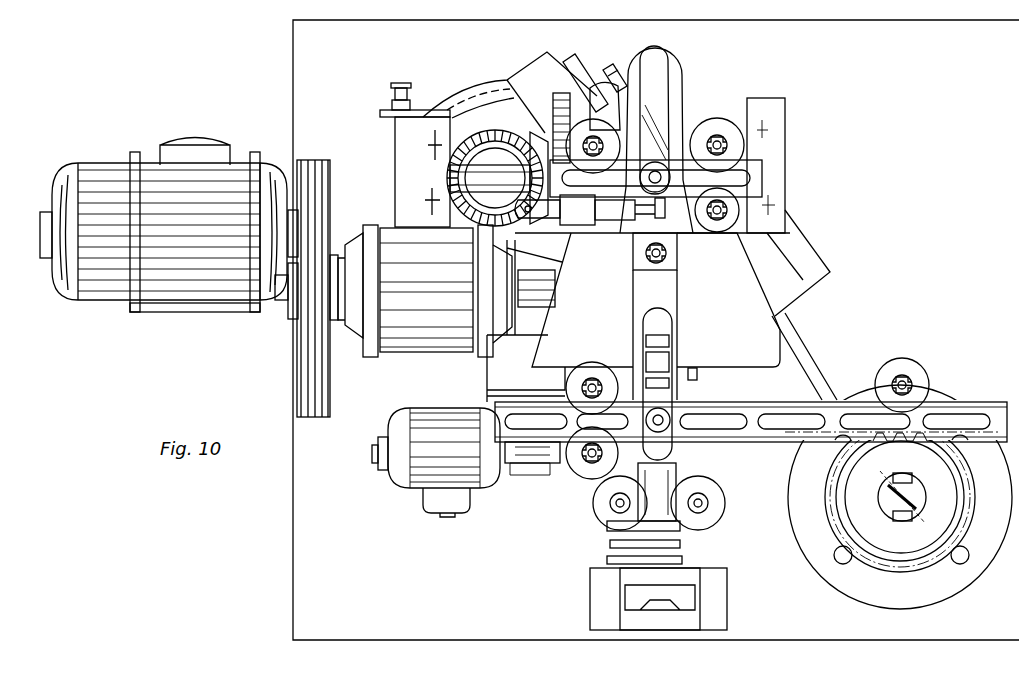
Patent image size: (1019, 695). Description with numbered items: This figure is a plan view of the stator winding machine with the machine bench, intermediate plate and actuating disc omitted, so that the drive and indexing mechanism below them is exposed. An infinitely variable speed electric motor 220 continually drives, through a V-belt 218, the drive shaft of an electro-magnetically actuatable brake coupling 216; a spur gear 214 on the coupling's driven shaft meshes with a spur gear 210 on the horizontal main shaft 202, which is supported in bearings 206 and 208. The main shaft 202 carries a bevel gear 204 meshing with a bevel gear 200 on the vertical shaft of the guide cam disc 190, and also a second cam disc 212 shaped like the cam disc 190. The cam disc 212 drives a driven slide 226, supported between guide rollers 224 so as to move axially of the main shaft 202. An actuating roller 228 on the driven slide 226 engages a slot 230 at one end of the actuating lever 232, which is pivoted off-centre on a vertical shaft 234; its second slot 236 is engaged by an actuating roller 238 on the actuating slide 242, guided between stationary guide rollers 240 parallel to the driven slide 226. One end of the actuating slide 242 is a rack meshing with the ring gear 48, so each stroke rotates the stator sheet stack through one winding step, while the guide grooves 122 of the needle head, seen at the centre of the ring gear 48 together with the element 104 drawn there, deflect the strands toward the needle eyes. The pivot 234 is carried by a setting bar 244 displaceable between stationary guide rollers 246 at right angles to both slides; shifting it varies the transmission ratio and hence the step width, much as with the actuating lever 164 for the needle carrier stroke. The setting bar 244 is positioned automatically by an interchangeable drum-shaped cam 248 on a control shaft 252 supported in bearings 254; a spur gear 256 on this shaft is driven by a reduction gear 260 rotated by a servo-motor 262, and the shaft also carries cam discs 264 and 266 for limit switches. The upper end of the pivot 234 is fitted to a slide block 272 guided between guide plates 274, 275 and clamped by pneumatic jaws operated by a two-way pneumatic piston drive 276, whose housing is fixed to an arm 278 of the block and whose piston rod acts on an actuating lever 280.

The ring gear 48 is at (880, 558).
The axle hub 104 is at (918, 498).
The guide grooves 122 is at (920, 468).
The actuating lever 164 is at (806, 358).
The guide cam disc 190 is at (467, 96).
The bevel gear 200 is at (432, 150).
The main shaft 202 is at (450, 176).
The bevel gear 204 is at (500, 120).
The bearing 206 is at (395, 198).
The bearing 208 is at (785, 181).
The spur gear 210 is at (560, 93).
The second cam disc 212 is at (605, 76).
The spur gear 214 is at (560, 253).
The electro-magnetically actuatable brake coupling 216 is at (448, 342).
The V-belt 218 is at (315, 393).
The infinitely variable speed electric motor 220 is at (105, 300).
The guide rollers 224 is at (735, 133).
The driven slide 226 is at (735, 168).
The actuating roller 228 is at (658, 163).
The slot 230 is at (660, 88).
The actuating lever 232 is at (660, 58).
The vertical shaft (pivot) 234 is at (720, 238).
The second slot 236 is at (655, 318).
The actuating roller 238 is at (668, 428).
The stationary guide rollers 240 is at (585, 463).
The actuating slide 242 is at (782, 408).
The setting bar 244 is at (612, 503).
The stationary guide rollers 246 is at (705, 506).
The drum-shaped cam 248 is at (690, 468).
The control shaft 252 is at (607, 526).
The bearings 254 is at (727, 608).
The spur gear 256 is at (697, 373).
The reduction gear 260 is at (530, 447).
The servo-motor 262 is at (418, 470).
The cam disc 264 is at (607, 558).
The cam disc 266 is at (610, 543).
The slide block 272 is at (668, 263).
The guide plate 274 is at (606, 319).
The guide plate 275 is at (731, 341).
The two-way pneumatic piston drive 276 is at (590, 210).
The arm 278 is at (612, 256).
The actuating lever 280 is at (700, 256).